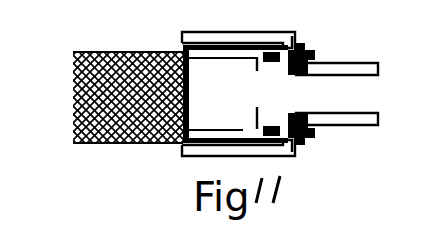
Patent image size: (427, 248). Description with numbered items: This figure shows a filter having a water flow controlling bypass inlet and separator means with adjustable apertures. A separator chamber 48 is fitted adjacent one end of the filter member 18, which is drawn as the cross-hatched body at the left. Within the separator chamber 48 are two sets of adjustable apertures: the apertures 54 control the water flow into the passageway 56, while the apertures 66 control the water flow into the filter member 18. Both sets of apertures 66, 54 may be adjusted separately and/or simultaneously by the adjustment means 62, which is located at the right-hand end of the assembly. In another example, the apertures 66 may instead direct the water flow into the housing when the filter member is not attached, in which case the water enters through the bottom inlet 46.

The filter member 18 is at (93, 143).
The passageway 56 is at (175, 43).
The separator chamber 48 is at (235, 94).
The apertures 66 is at (189, 120).
The apertures 54 is at (261, 93).
The adjustment means 62 is at (313, 53).
The bottom inlet 46 is at (357, 95).